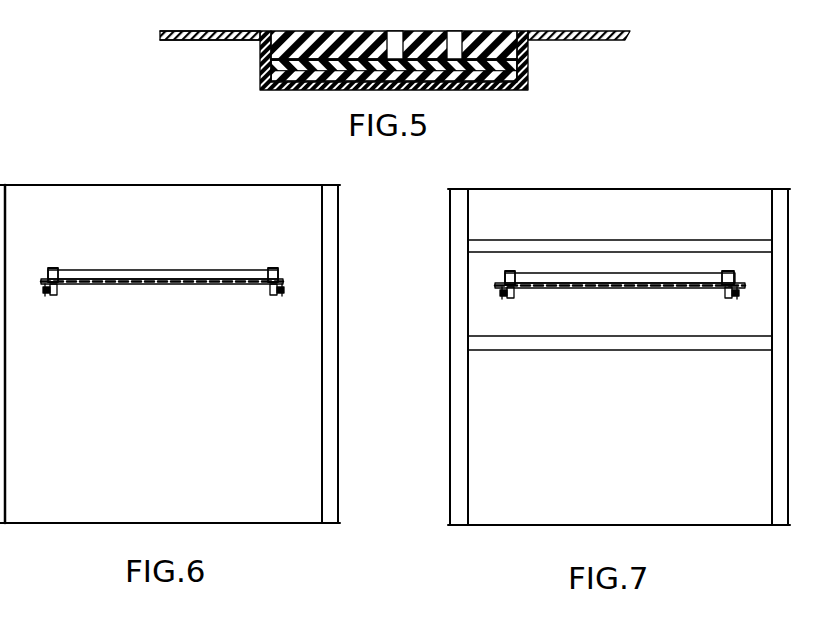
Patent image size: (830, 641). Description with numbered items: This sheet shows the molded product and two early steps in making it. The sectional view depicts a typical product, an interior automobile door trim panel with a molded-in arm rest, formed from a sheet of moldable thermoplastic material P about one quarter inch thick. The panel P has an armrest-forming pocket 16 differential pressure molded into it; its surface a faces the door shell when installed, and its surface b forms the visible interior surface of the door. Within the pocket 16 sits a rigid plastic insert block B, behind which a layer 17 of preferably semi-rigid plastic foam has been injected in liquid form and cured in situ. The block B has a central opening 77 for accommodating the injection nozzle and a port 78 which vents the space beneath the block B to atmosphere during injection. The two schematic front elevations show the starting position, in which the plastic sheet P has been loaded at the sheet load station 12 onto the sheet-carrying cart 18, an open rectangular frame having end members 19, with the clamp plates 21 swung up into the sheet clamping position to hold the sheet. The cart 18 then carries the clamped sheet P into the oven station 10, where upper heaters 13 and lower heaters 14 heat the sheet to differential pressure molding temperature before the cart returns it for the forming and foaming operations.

In FIG. 5, the sheet of moldable thermoplastic material P is at (588, 33).
In FIG. 6, the sheet of moldable thermoplastic material P is at (186, 285).
In FIG. 7, the sheet of moldable thermoplastic material P is at (622, 289).
In FIG. 5, the rigid plastic insert block B is at (483, 40).
In FIG. 5, the armrest-forming pocket 16 is at (528, 63).
In FIG. 5, the layer of semi-rigid plastic foam 17 is at (498, 83).
In FIG. 5, the central opening 77 is at (395, 37).
In FIG. 5, the port 78 is at (452, 42).
In FIG. 5, the surface a is at (212, 32).
In FIG. 5, the surface b is at (223, 42).
In FIG. 6, the sheet load station 12 is at (140, 185).
In FIG. 7, the oven station 10 is at (662, 189).
In FIG. 7, the upper heaters 13 is at (672, 245).
In FIG. 7, the lower heaters 14 is at (712, 352).
In FIG. 6, the sheet-carrying cart 18 is at (178, 271).
In FIG. 7, the sheet-carrying cart 18 is at (620, 272).
In FIG. 6, the end members 19 is at (55, 270).
In FIG. 7, the end members 19 is at (508, 272).
In FIG. 6, the clamp plates 21 is at (58, 290).
In FIG. 7, the clamp plates 21 is at (512, 292).